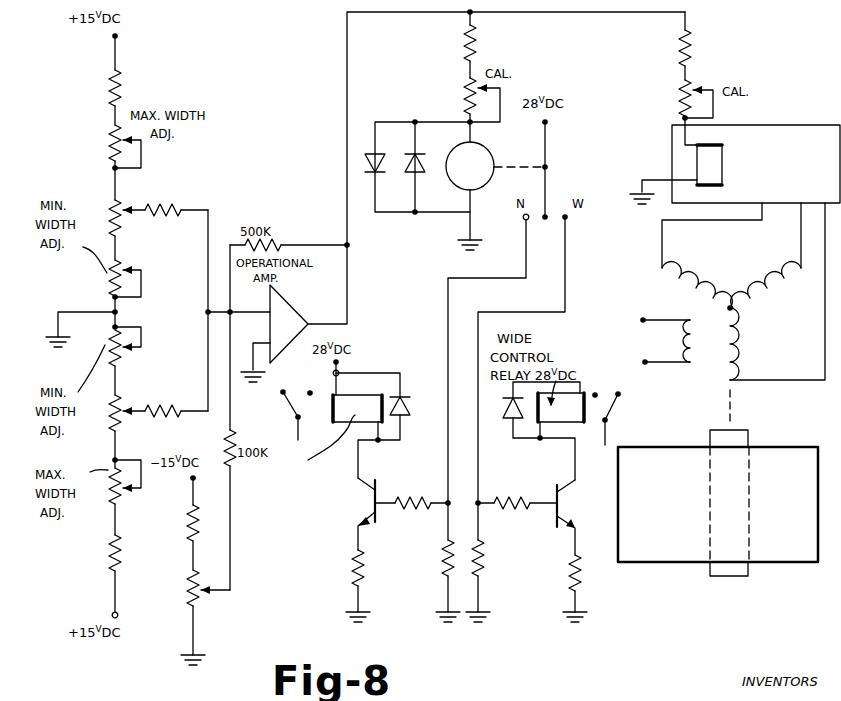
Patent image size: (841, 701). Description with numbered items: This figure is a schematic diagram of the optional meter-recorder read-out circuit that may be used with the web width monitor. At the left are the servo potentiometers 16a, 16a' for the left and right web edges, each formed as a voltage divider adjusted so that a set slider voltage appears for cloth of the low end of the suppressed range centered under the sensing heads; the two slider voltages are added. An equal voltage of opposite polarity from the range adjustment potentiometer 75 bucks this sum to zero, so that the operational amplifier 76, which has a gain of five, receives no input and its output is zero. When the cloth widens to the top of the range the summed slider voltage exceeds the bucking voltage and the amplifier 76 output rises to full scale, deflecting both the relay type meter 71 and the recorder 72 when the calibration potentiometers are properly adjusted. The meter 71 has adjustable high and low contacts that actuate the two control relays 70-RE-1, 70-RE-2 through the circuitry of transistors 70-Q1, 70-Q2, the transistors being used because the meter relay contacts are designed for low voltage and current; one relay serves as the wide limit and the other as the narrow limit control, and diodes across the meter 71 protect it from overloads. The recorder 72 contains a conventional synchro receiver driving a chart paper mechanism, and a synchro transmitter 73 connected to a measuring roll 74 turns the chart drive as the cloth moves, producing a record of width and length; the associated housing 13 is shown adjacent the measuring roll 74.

The servo potentiometer 16a is at (158, 206).
The servo potentiometer 16a' is at (158, 397).
The relay type meter 71 is at (447, 148).
The recorder 72 is at (762, 125).
The synchro transmitter 73 is at (728, 285).
The measuring roll 74 is at (745, 437).
The receptacle / chamber 13 is at (668, 457).
The range adjustment potentiometer 75 is at (190, 588).
The operational amplifier 76 is at (280, 353).
The control relay 70-RE-2 is at (333, 420).
The control relay 70-RE-1 is at (565, 415).
The transistor 70-Q2 is at (365, 497).
The transistor 70-Q1 is at (550, 512).